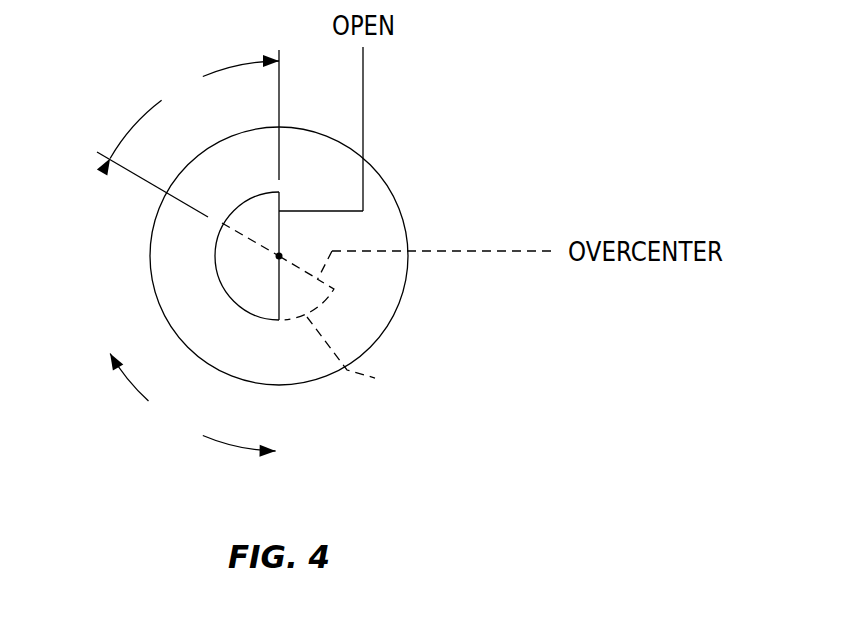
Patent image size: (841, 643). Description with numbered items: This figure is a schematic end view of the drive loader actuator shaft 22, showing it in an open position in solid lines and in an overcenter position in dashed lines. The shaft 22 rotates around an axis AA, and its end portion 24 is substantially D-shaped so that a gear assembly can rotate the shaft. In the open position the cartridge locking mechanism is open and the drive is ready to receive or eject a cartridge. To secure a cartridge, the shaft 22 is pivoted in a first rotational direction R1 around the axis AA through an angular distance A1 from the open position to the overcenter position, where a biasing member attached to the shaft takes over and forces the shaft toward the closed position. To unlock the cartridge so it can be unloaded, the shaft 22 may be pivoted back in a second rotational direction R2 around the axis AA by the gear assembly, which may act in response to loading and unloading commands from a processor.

The drive loader actuator shaft 22 is at (148, 257).
The end portion 24 is at (280, 233).
The angular distance A1 is at (188, 155).
The first rotational direction R1 is at (209, 440).
The second rotational direction R2 is at (142, 397).
The axis AA is at (279, 256).